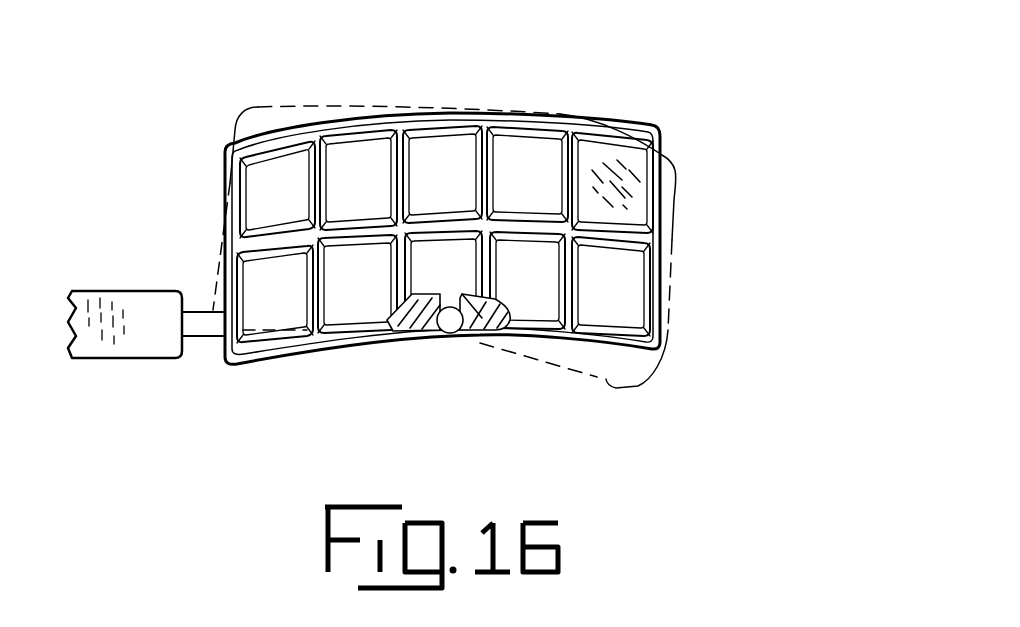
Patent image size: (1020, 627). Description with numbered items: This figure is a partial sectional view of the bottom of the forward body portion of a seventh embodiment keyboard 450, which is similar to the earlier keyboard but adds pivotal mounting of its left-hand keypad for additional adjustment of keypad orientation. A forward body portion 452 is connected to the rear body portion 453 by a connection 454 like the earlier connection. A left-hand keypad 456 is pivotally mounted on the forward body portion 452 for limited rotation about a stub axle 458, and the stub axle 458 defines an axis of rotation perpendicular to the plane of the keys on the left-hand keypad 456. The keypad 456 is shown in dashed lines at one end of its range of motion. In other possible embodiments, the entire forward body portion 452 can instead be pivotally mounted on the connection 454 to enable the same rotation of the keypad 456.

The keyboard 450 is at (773, 272).
The forward body portion 452 is at (370, 345).
The rear body portion 453 is at (105, 360).
The connection 454 is at (222, 334).
The left-hand keypad 456 is at (224, 177).
The stub axle 458 is at (492, 350).